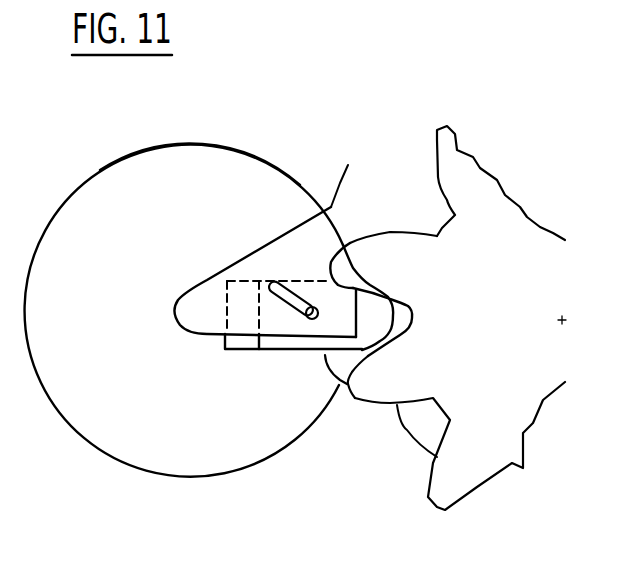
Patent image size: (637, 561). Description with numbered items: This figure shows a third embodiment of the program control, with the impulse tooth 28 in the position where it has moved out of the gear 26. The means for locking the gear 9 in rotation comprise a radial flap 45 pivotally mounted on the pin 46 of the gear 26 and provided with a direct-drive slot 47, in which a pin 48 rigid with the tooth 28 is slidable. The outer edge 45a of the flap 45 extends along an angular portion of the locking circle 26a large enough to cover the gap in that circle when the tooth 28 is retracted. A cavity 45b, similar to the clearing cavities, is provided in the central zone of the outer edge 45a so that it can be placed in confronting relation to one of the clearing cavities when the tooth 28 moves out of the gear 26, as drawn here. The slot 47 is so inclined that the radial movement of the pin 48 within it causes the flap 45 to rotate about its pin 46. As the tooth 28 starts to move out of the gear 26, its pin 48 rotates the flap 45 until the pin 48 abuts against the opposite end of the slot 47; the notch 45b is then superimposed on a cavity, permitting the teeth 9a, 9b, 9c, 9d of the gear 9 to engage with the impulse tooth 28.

The gear 9 is at (445, 330).
The tooth of the gear 9a is at (450, 157).
The tooth of the gear 9b is at (418, 205).
The tooth of the gear 9c is at (377, 310).
The tooth of the gear 9d is at (475, 479).
The gear 26 is at (119, 216).
The locking circle 26a is at (237, 150).
The tooth 28 is at (415, 330).
The radial flap 45 is at (317, 227).
The outer edge of the flap 45a is at (360, 176).
The cavity 45b is at (343, 245).
The pin 46 is at (193, 310).
The direct-drive slot 47 is at (282, 308).
The pin 48 is at (307, 319).